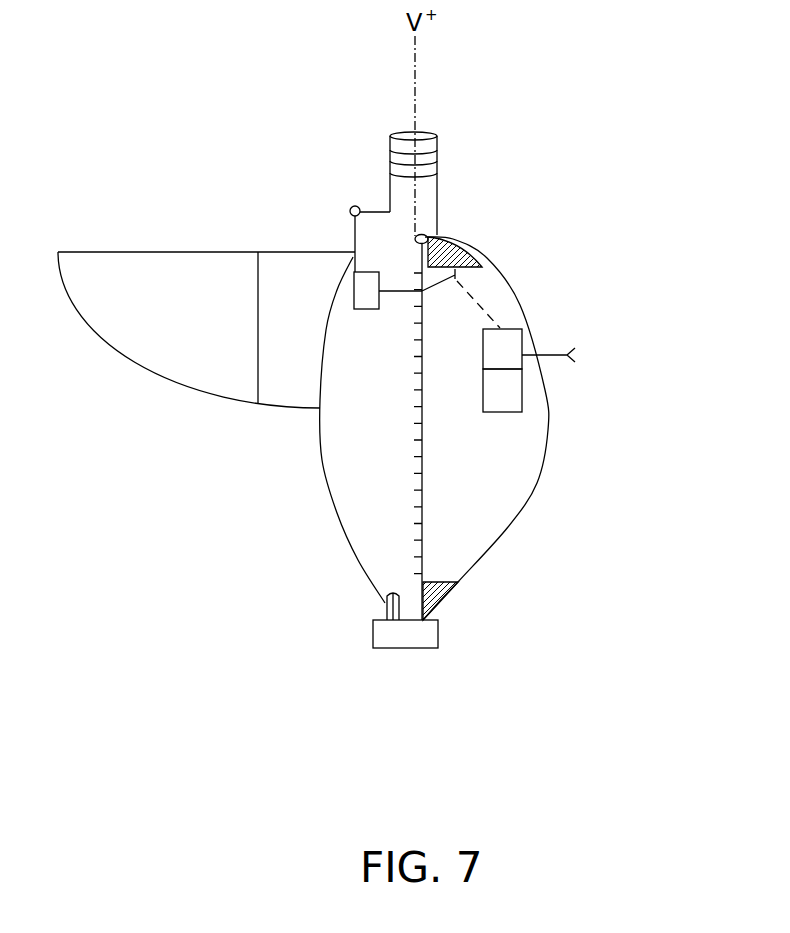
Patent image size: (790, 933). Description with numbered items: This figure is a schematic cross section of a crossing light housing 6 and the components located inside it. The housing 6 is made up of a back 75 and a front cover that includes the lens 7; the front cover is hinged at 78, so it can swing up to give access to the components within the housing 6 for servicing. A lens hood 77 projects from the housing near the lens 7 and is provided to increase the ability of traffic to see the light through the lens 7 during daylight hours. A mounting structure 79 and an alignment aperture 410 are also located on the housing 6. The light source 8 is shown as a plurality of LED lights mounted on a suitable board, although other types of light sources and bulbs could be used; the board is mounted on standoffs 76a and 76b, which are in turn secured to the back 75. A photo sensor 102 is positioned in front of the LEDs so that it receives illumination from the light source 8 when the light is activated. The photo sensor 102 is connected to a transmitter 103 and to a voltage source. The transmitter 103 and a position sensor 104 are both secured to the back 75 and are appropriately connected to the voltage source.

The crossing light housing 6 is at (612, 362).
The lens 7 is at (345, 545).
The light source 8 is at (422, 476).
The back 75 is at (533, 485).
The standoff 76a is at (460, 264).
The standoff 76b is at (455, 587).
The lens hood 77 is at (172, 265).
The hinge 78 is at (351, 206).
The mounting structure 79 is at (437, 146).
The photo sensor 102 is at (363, 291).
The transmitter 103 is at (507, 352).
The position sensor 104 is at (508, 387).
The alignment aperture 410 is at (407, 649).